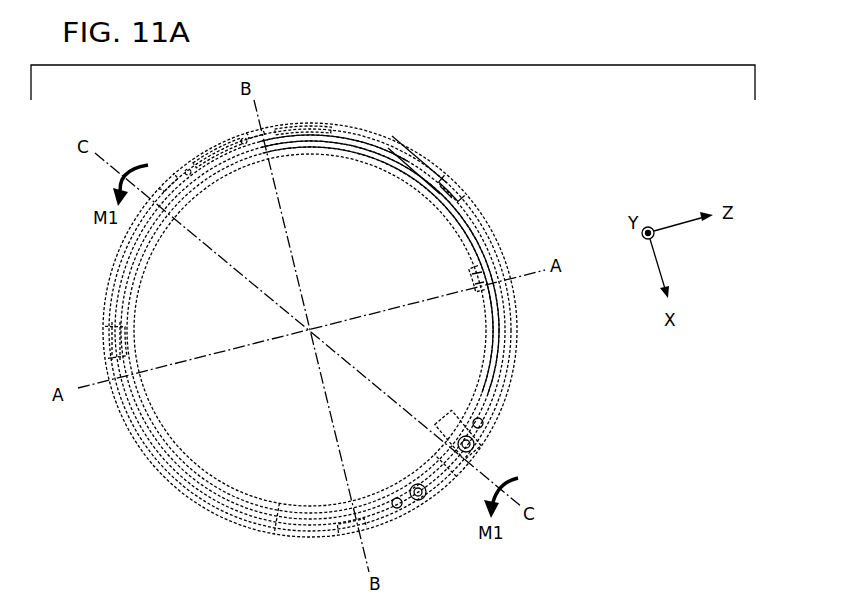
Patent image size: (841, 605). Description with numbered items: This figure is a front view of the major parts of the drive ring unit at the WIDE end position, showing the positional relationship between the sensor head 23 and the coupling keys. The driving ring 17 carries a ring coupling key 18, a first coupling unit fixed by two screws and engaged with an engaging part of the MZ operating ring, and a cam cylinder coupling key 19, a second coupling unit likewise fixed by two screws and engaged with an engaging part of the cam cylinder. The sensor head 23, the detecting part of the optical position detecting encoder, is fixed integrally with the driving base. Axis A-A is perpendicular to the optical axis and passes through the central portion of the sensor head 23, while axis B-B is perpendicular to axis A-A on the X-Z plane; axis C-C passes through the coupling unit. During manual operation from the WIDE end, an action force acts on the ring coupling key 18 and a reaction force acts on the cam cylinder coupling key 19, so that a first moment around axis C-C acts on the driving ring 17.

The driving ring 17 is at (445, 197).
The ring coupling key 18 is at (437, 460).
The cam cylinder coupling key 19 is at (450, 427).
The sensor head 23 is at (480, 278).